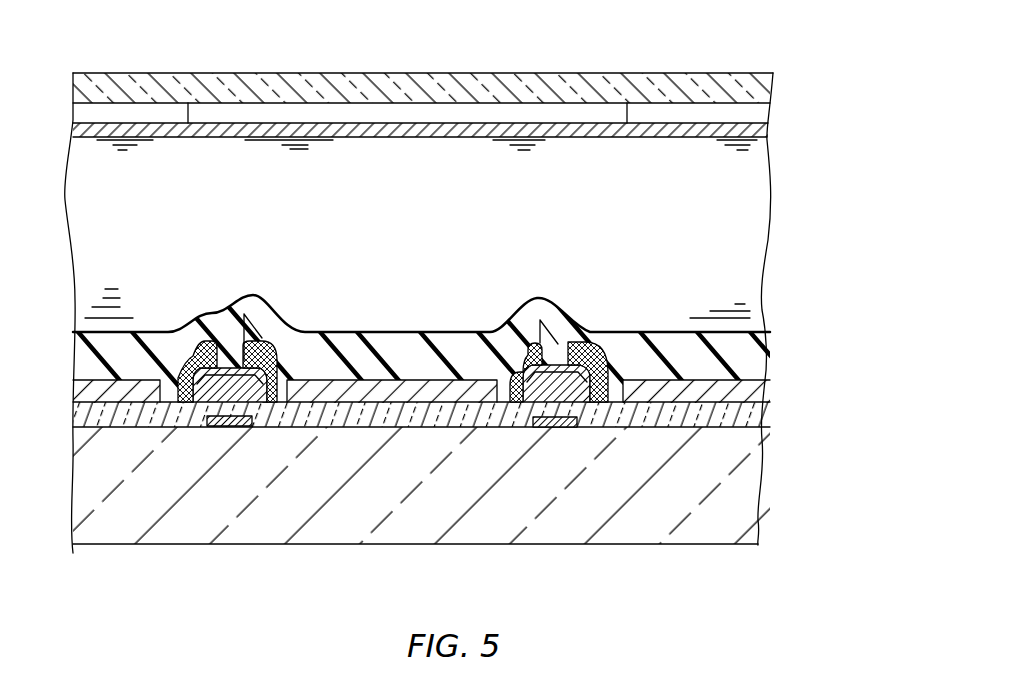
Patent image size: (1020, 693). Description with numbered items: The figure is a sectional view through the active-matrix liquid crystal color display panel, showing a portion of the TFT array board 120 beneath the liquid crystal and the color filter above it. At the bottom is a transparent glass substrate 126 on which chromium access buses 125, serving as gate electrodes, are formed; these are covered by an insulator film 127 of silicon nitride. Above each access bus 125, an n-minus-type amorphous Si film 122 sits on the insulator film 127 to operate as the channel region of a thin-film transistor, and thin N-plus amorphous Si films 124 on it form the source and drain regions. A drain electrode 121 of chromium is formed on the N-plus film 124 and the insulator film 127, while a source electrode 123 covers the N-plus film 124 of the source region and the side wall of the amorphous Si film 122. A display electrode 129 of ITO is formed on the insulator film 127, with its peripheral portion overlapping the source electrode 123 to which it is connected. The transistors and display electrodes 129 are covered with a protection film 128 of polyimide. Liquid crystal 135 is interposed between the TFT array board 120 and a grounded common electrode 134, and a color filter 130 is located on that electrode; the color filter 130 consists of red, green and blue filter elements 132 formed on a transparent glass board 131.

The TFT array board 120 is at (496, 409).
The drain electrode 121 is at (575, 345).
The amorphous Si film 122 is at (553, 367).
The source electrode 123 is at (520, 395).
The N+-amorphous Si film 124 is at (527, 362).
The access bus 125 is at (547, 423).
The transparent glass substrate 126 is at (752, 487).
The insulator film 127 is at (752, 418).
The protection film 128 is at (752, 362).
The display electrode 129 is at (360, 403).
The color filter 130 is at (511, 119).
The transparent glass board 131 is at (763, 90).
The filter element 132 is at (765, 113).
The common electrode 134 is at (767, 132).
The liquid crystal 135 is at (752, 242).